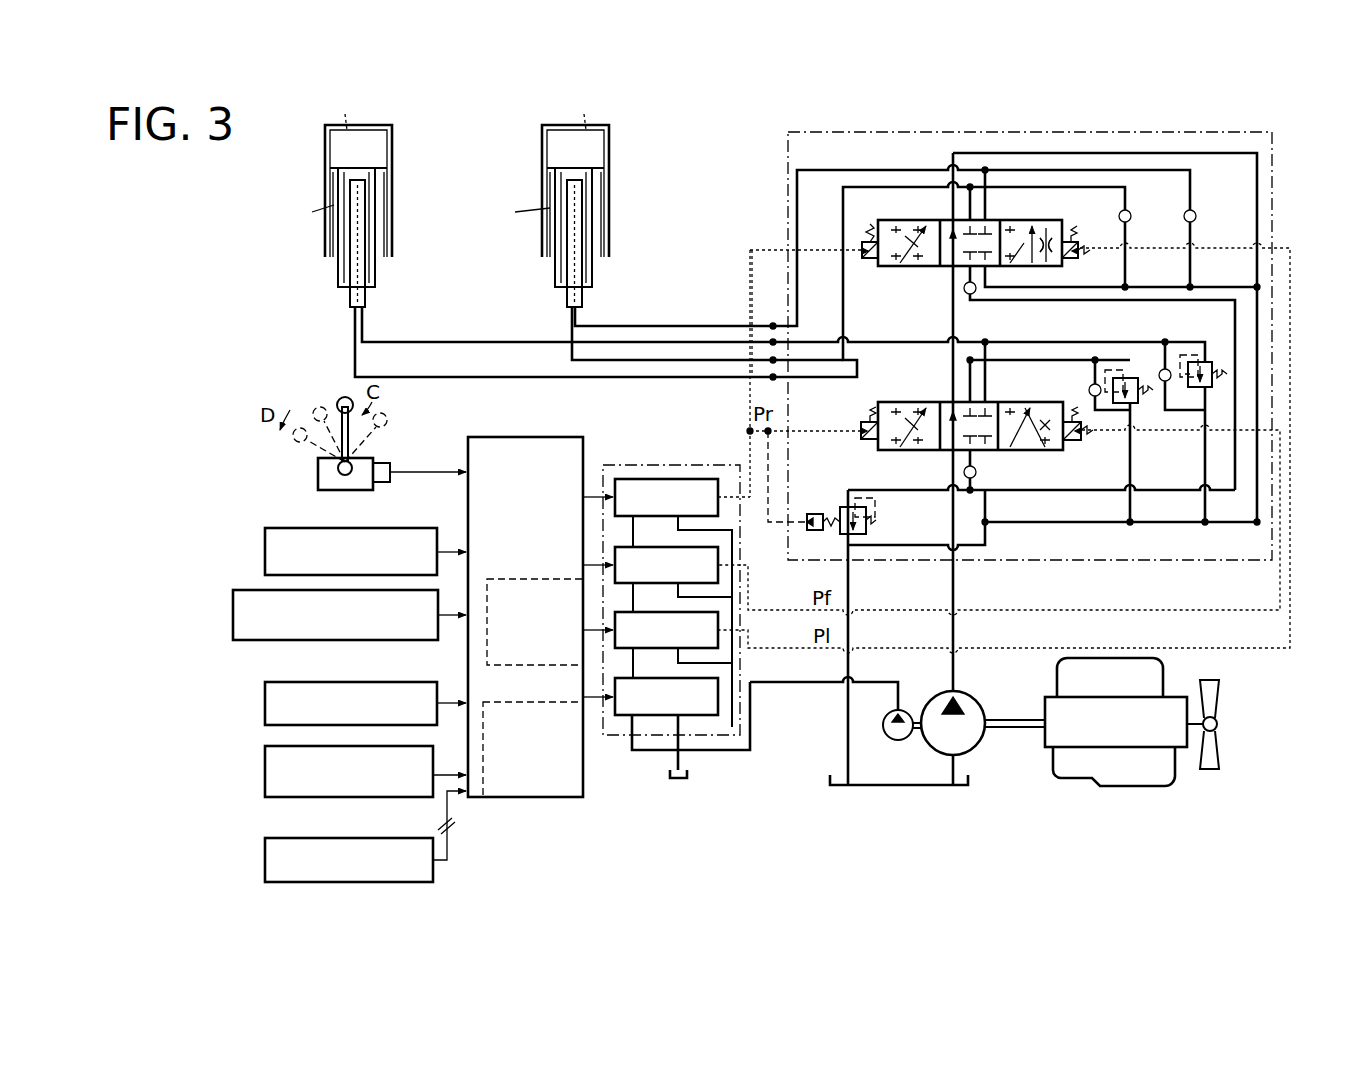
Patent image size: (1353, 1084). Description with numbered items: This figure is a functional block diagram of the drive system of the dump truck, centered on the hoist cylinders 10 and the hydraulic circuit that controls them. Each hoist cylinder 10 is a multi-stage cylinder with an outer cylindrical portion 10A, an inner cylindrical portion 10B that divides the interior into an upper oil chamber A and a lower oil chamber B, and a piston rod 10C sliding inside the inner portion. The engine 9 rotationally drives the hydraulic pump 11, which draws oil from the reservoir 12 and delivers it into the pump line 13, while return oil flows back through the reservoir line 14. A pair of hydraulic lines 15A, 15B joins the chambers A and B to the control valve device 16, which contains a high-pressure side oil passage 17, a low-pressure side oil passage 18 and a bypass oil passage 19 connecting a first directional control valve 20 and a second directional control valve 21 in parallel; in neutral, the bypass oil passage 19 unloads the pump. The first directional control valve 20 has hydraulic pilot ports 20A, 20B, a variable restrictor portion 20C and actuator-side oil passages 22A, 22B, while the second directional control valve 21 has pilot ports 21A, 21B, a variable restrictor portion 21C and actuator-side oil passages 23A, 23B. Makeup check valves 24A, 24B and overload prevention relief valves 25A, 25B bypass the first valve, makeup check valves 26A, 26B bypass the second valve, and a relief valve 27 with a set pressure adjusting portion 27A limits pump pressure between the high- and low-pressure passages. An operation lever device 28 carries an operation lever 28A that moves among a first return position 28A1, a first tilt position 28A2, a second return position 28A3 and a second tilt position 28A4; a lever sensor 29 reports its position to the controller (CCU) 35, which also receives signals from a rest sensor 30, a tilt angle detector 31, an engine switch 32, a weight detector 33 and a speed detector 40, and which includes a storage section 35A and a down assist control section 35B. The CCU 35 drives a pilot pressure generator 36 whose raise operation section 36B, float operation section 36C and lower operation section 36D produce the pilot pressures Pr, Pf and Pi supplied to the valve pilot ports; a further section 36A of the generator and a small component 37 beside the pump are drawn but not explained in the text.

The engine 9 is at (1142, 740).
The hoist cylinder 10 is at (385, 124).
The outer cylindrical portion 10A is at (390, 170).
The inner cylindrical portion 10B is at (385, 215).
The piston rod 10C is at (350, 296).
The hydraulic pump 11 is at (976, 700).
The hydraulic oil reservoir 12 is at (942, 786).
The pump line 13 is at (958, 600).
The reservoir line 14 is at (851, 590).
The hydraulic line 15A is at (412, 340).
The hydraulic line 15B is at (568, 361).
The control valve device 16 is at (1180, 129).
The high-pressure side oil passage 17 is at (1104, 492).
The low-pressure side oil passage 18 is at (1178, 523).
The bypass oil passage 19 is at (973, 302).
The first directional control valve 20 is at (928, 452).
The hydraulic pilot port 20A is at (864, 441).
The hydraulic pilot port 20B is at (1072, 442).
The variable restrictor portion 20C is at (1020, 452).
The second directional control valve 21 is at (942, 268).
The hydraulic pilot port 21A is at (870, 260).
The hydraulic pilot port 21B is at (1068, 259).
The variable restrictor portion 21C is at (1050, 236).
The actuator-side oil passage 22A is at (812, 338).
The actuator-side oil passage 22B is at (842, 382).
The actuator-side oil passage 23A is at (793, 215).
The actuator-side oil passage 23B is at (840, 184).
The makeup check valve 24A is at (1160, 368).
The makeup check valve 24B is at (1090, 384).
The overload prevention relief valve 25A is at (1205, 358).
The overload prevention relief valve 25B is at (1143, 410).
The makeup check valve 26A is at (1213, 205).
The makeup check valve 26B is at (1147, 205).
The relief valve 27 is at (868, 521).
The set pressure adjusting portion 27A is at (813, 512).
The operation lever device 28 is at (326, 486).
The operation lever 28A is at (352, 440).
The first return position 28A1 is at (343, 397).
The first tilt position 28A2 is at (388, 420).
The second return position 28A3 is at (315, 408).
The second tilt position 28A4 is at (294, 440).
The lever sensor 29 is at (392, 477).
The rest sensor 30 is at (334, 527).
The tilt angle detector 31 is at (298, 641).
The engine switch 32 is at (356, 681).
The weight detector 33 is at (348, 798).
The hydraulic control controller (CCU) 35 is at (512, 436).
The storage section 35A is at (545, 798).
The down assist control section 35B is at (486, 648).
The pilot pressure generator 36 is at (700, 462).
The hold control 36A is at (632, 717).
The raise operation section 36B is at (652, 478).
The float operation section 36C is at (735, 566).
The lower operation section 36D is at (735, 630).
The pilot pump 37 is at (886, 740).
The speed detector 40 is at (330, 883).